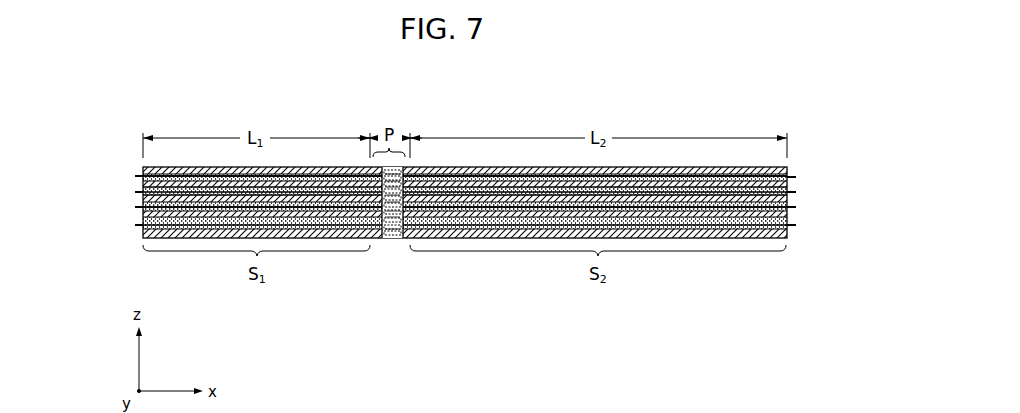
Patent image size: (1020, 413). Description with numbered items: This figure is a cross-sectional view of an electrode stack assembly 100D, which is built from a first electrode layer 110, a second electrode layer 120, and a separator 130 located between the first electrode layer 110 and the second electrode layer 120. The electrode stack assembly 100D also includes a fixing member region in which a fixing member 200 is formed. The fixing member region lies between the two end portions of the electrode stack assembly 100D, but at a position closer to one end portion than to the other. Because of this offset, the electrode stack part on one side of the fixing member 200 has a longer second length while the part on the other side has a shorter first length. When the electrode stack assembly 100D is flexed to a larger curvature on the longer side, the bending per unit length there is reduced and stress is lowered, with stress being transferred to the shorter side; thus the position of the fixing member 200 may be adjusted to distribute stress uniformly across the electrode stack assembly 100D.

The electrode stack assembly 100D is at (706, 115).
The first electrode layer 110 is at (139, 200).
The second electrode layer 120 is at (142, 182).
The separator 130 is at (142, 190).
The fixing member 200 is at (392, 240).